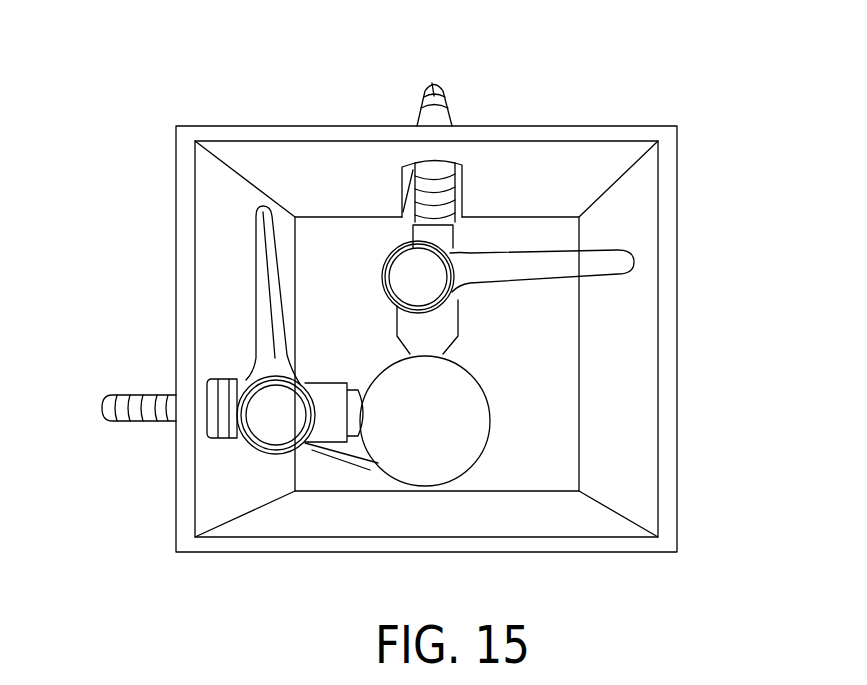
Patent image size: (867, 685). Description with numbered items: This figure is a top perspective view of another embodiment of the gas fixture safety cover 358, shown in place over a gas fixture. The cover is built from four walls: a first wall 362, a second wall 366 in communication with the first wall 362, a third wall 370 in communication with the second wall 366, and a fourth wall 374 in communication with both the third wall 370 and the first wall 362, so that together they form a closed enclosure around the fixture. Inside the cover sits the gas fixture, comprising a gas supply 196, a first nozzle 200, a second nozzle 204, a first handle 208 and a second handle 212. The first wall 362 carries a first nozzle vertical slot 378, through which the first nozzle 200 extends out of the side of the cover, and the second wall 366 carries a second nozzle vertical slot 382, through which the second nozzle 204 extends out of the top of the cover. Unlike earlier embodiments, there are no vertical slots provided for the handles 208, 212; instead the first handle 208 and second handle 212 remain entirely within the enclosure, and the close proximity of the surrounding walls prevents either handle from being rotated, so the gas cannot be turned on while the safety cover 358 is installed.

The gas supply 196 is at (425, 448).
The first nozzle 200 is at (165, 413).
The second nozzle 204 is at (427, 86).
The first handle 208 is at (263, 253).
The second handle 212 is at (601, 263).
The gas fixture safety cover 358 is at (575, 505).
The first wall 362 is at (215, 472).
The second wall 366 is at (285, 168).
The third wall 370 is at (640, 217).
The fourth wall 374 is at (623, 468).
The first nozzle vertical slot 378 is at (213, 381).
The second nozzle vertical slot 382 is at (463, 180).